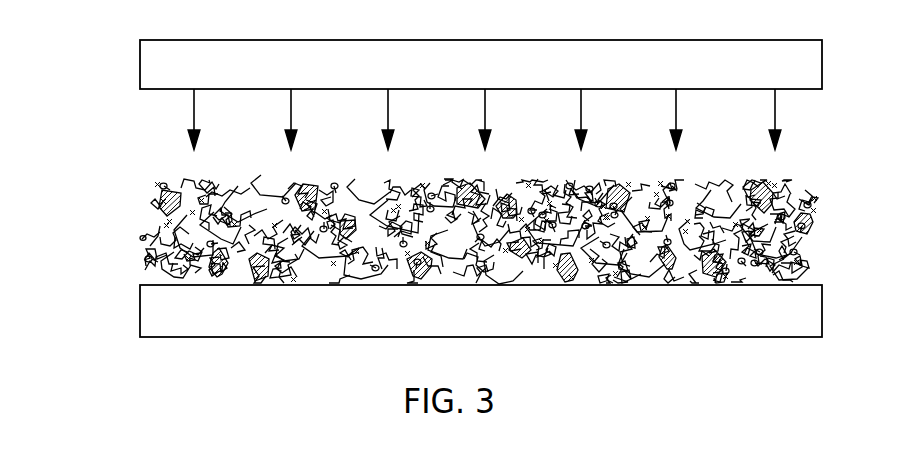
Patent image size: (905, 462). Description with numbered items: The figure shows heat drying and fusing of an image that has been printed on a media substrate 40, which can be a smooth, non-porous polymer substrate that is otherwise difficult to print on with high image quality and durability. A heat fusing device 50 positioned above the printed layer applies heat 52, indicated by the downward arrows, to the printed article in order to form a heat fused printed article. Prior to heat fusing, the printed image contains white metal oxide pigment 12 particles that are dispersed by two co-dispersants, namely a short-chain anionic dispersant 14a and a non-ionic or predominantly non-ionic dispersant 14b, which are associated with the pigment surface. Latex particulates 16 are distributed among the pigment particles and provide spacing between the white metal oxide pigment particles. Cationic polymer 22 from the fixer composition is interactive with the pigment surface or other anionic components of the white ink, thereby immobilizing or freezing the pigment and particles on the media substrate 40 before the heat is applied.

The heat fusing device 50 is at (492, 73).
The media substrate 40 is at (492, 321).
The heat 52 is at (194, 108).
The cationic polymer 22 is at (206, 197).
The latex particulates 16 is at (159, 190).
The white metal oxide pigment 12 is at (160, 226).
The short-chain anionic dispersant 14a is at (148, 260).
The non-ionic dispersant 14b is at (142, 239).